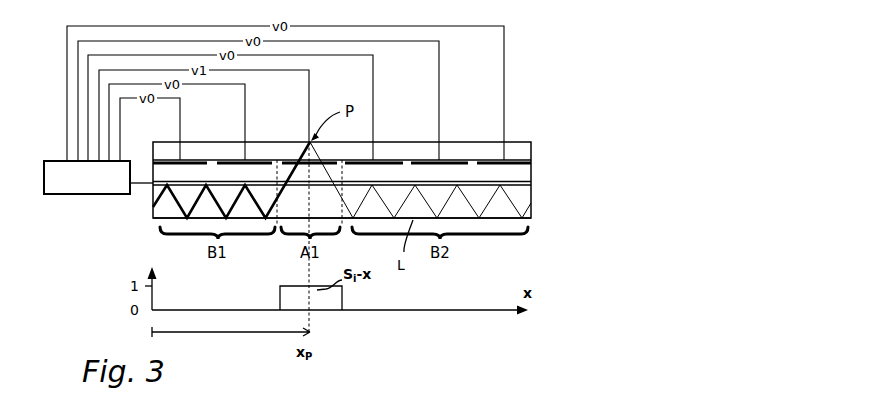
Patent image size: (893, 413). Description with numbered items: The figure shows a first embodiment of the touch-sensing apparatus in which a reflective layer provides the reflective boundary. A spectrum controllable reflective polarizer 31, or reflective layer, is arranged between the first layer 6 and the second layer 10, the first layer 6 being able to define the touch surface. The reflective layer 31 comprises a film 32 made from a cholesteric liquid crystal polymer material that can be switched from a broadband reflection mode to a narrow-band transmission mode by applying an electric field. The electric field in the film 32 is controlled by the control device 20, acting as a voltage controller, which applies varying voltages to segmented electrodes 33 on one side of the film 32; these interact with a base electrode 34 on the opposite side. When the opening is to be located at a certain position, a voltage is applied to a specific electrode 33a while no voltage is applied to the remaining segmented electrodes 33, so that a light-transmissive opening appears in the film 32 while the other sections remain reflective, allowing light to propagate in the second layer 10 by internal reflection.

The control device 20 is at (98, 177).
The first layer 6 is at (513, 152).
The segmented electrodes 33 is at (513, 161).
The specific electrode 33a is at (318, 161).
The spectrum controllable reflective polarizer 31 is at (552, 173).
The film 32 is at (517, 175).
The base electrode 34 is at (520, 187).
The second layer 10 is at (502, 210).